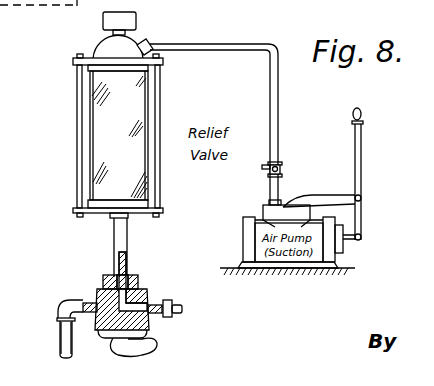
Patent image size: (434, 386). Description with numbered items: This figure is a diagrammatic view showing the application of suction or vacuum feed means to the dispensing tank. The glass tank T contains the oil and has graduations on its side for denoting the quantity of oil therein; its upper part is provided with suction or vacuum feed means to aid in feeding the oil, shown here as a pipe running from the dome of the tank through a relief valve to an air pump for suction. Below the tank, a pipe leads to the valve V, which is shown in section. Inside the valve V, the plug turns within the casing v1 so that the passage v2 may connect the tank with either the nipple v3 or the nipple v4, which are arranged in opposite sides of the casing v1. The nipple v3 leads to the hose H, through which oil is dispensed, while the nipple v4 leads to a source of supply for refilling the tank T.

The glass tank T is at (118, 114).
The valve V is at (97, 283).
The passage v2 is at (133, 288).
The casing v1 is at (147, 298).
The nipple v3 is at (87, 305).
The nipple v4 is at (177, 313).
The hose H is at (58, 340).